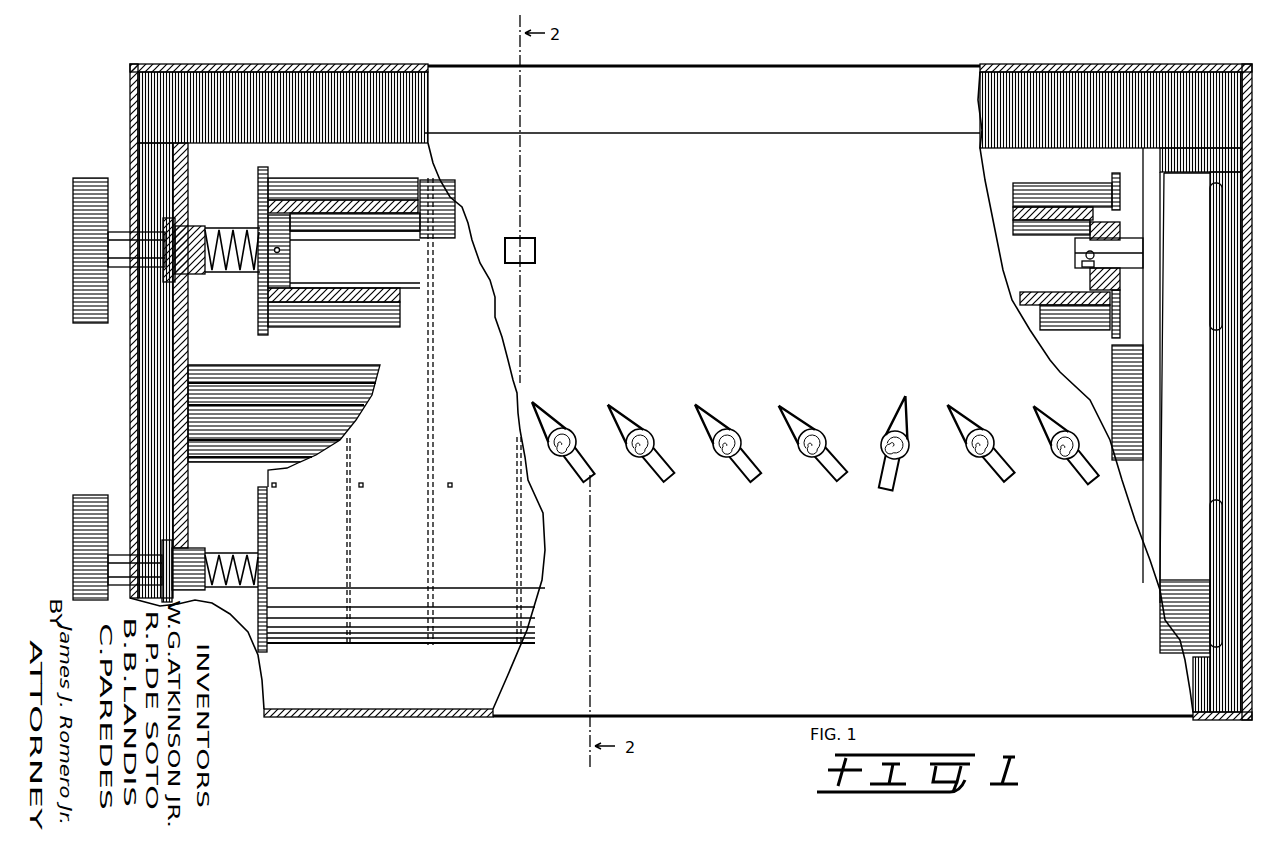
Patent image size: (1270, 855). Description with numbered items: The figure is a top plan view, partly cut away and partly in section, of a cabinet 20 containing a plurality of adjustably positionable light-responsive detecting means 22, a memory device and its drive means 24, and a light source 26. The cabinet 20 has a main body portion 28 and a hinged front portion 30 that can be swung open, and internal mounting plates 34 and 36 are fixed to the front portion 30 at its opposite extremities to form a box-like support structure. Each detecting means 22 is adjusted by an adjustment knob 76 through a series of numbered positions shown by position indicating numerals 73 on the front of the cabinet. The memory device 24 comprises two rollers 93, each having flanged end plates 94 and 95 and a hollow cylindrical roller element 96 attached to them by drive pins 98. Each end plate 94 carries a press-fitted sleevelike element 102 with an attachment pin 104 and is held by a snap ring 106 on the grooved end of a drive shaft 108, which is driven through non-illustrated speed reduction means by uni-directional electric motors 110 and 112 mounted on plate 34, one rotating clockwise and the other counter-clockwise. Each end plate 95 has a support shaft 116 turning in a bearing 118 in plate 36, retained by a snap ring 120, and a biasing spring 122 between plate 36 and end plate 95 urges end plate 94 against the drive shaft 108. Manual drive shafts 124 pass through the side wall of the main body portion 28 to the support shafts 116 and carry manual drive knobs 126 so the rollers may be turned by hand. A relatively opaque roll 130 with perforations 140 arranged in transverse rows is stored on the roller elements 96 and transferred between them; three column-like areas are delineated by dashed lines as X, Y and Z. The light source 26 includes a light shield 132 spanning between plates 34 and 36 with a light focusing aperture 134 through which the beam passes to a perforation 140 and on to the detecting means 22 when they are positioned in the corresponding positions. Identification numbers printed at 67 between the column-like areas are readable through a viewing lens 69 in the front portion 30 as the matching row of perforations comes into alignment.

The cabinet 20 is at (506, 51).
The light-responsive detecting means 22 is at (961, 466).
The memory device and drive means 24 is at (337, 666).
The light source 26 is at (260, 466).
The main body portion 28 is at (957, 65).
The hinged front portion 30 is at (872, 150).
The internal mounting plate 34 is at (192, 355).
The internal mounting plate 36 is at (188, 160).
The printed identification numbers 67 is at (518, 503).
The viewing lens 69 is at (535, 245).
The position indicating numerals 73 is at (957, 380).
The adjustment knob 76 is at (647, 477).
The roller 93 is at (344, 166).
The flanged end plate 94 is at (1115, 228).
The flanged end plate 95 is at (292, 265).
The roller element 96 is at (367, 290).
The drive pin 98 is at (277, 207).
The sleevelike element 102 is at (1126, 282).
The attachment pin 104 is at (1085, 255).
The snap ring 106 is at (1088, 273).
The drive shaft 108 is at (1140, 248).
The electric motor 110 is at (1205, 318).
The electric motor 112 is at (1213, 528).
The support shaft 116 is at (237, 232).
The bearing 118 is at (198, 227).
The snap ring 120 is at (168, 222).
The biasing spring 122 is at (230, 270).
The manual drive shaft 124 is at (120, 558).
The manual drive knob 126 is at (72, 493).
The roll 130 is at (405, 645).
The light shield 132 is at (338, 364).
The light focusing aperture 134 is at (257, 408).
The perforation 140 is at (361, 490).